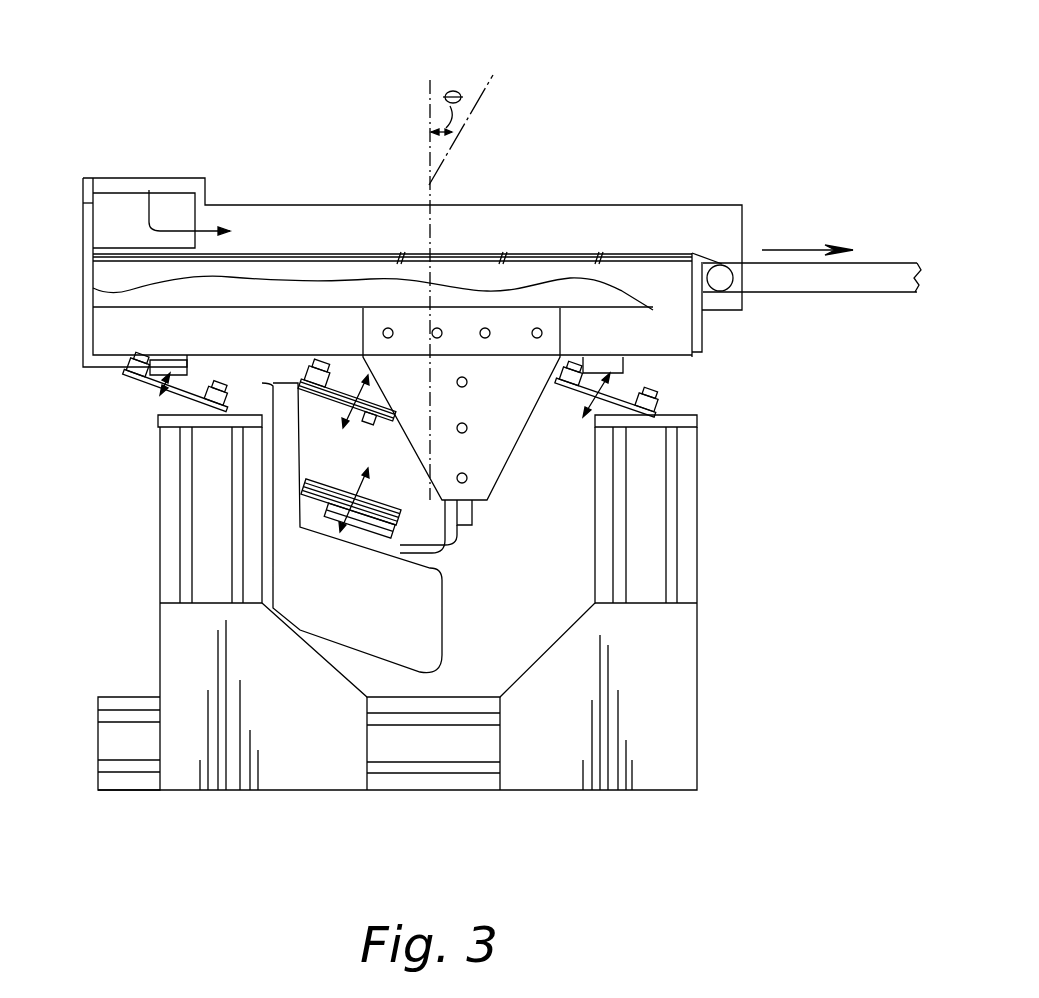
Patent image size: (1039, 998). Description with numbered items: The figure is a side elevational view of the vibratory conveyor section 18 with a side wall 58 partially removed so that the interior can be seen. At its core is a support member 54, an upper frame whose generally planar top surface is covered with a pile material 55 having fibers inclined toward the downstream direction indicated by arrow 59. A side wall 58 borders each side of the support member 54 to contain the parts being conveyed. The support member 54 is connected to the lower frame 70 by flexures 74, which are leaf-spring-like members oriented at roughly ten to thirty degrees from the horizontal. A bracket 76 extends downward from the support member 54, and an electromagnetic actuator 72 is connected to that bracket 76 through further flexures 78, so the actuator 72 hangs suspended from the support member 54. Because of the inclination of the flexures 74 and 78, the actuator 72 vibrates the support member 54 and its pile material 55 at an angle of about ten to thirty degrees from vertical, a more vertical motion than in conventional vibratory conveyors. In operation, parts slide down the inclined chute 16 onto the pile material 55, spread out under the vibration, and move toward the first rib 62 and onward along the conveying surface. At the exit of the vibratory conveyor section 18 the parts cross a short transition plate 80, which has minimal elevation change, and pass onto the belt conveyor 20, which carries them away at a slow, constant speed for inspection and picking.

The vibratory conveyor section 18 is at (183, 100).
The inclined chute 16 is at (136, 210).
The side wall 58 is at (290, 213).
The first rib 62 is at (400, 252).
The pile material 55 is at (645, 254).
The transition plate 80 is at (710, 250).
The arrow 59 is at (793, 250).
The belt conveyor 20 is at (875, 265).
The support member 54 is at (672, 337).
The bracket 76 is at (485, 460).
The electromagnetic actuator 72 is at (405, 628).
The flexures 78 is at (360, 420).
The flexures 74 is at (150, 390).
The lower frame 70 is at (658, 702).